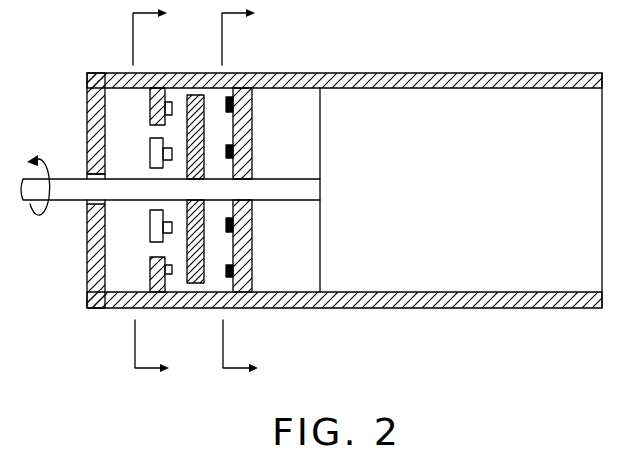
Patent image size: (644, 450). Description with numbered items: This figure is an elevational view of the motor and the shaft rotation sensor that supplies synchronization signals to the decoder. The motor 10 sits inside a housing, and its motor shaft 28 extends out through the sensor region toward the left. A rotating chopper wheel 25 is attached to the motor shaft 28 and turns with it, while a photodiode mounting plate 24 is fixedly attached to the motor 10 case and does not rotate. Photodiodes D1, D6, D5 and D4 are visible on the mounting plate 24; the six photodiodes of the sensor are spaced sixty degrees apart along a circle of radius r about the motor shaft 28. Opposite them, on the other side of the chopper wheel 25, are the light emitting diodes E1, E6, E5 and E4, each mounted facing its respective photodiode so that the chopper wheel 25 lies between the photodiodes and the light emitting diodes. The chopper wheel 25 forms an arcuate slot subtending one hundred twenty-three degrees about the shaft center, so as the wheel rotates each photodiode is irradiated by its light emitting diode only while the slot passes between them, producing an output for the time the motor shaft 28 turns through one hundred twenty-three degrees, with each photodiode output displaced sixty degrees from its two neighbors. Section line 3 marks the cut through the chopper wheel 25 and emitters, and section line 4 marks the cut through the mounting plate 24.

The motor 10 is at (492, 73).
The photodiode mounting plate 24 is at (253, 132).
The rotating chopper wheel 25 is at (186, 285).
The motor shaft 28 is at (57, 179).
The light emitting diode E1 is at (150, 118).
The light emitting diode E6 is at (150, 150).
The light emitting diode E5 is at (150, 229).
The light emitting diode E4 is at (162, 267).
The photodiode D1 is at (229, 98).
The photodiode D6 is at (233, 152).
The photodiode D5 is at (252, 219).
The photodiode D4 is at (222, 280).
The section line 3- 3 is at (158, 192).
The section line 4- 4 is at (246, 192).